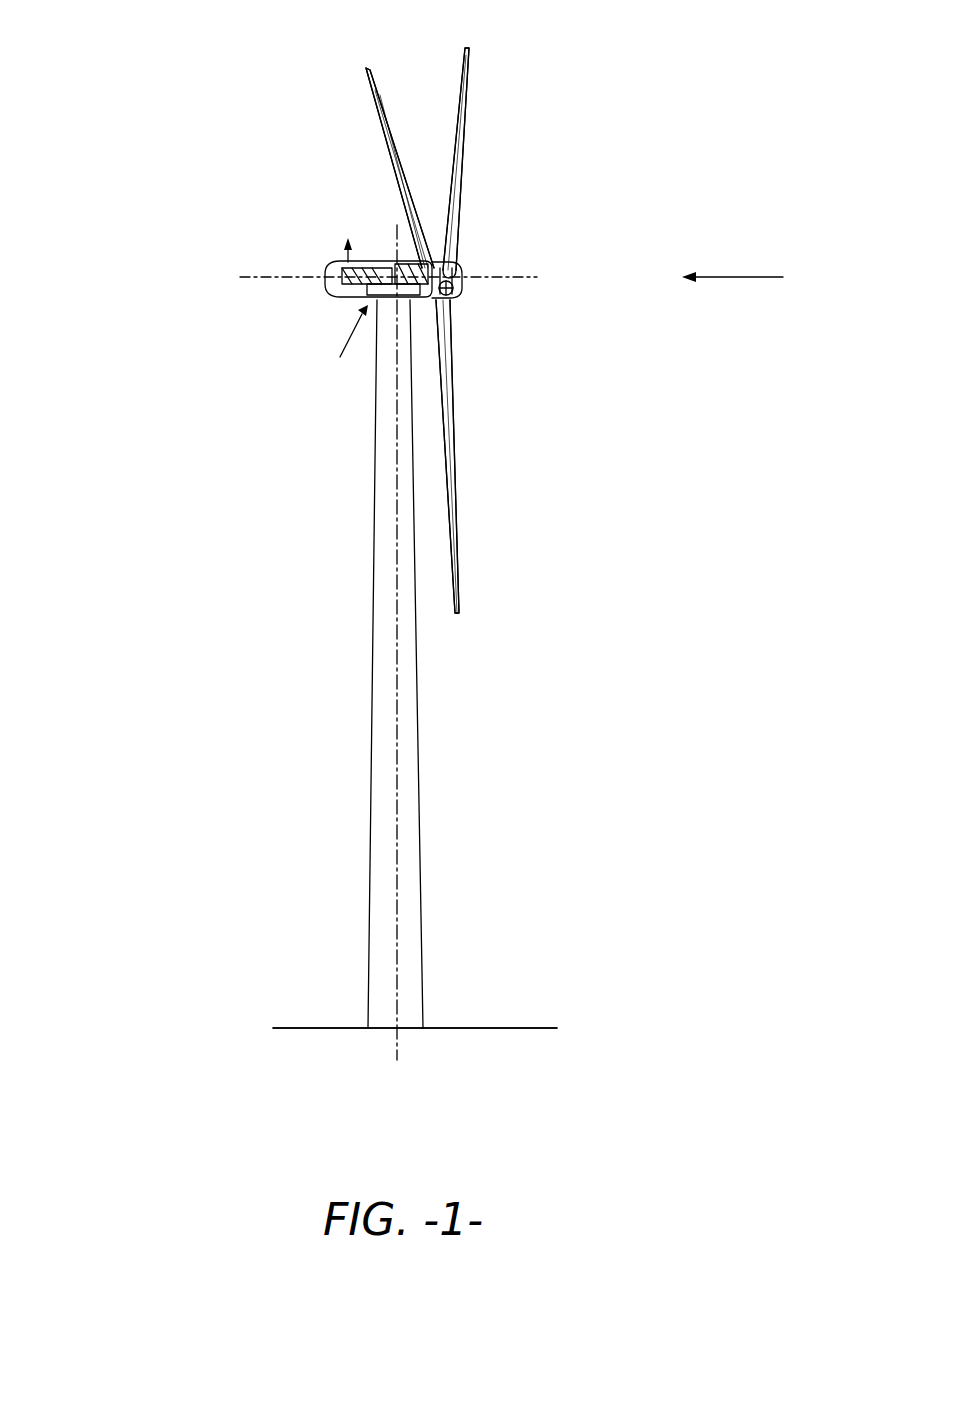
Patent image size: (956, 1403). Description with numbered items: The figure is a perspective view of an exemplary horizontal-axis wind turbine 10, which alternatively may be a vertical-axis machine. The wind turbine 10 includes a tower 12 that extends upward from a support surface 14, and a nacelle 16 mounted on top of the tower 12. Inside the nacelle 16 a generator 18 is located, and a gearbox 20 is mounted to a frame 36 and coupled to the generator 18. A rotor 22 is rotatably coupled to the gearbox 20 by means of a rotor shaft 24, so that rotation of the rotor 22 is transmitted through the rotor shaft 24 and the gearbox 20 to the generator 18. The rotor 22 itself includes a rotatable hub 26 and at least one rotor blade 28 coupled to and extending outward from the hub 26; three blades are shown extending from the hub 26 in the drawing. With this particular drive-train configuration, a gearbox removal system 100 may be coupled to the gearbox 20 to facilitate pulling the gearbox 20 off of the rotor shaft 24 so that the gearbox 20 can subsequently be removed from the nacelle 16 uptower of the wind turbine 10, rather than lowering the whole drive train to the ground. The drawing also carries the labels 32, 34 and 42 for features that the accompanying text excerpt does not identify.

The wind turbine 10 is at (164, 72).
The tower 12 is at (370, 810).
The support surface 14 is at (328, 1028).
The nacelle 16 is at (358, 300).
The generator 18 is at (328, 270).
The gearbox 20 is at (351, 228).
The rotor 22 is at (478, 181).
The rotor shaft 24 is at (418, 262).
The rotatable hub 26 is at (458, 272).
The rotor blade 28 is at (390, 130).
The wind direction 32 is at (750, 277).
The rotor axis 34 is at (537, 277).
The frame 36 is at (455, 291).
The tower axis 42 is at (397, 752).
The gearbox removal system 100 is at (337, 350).